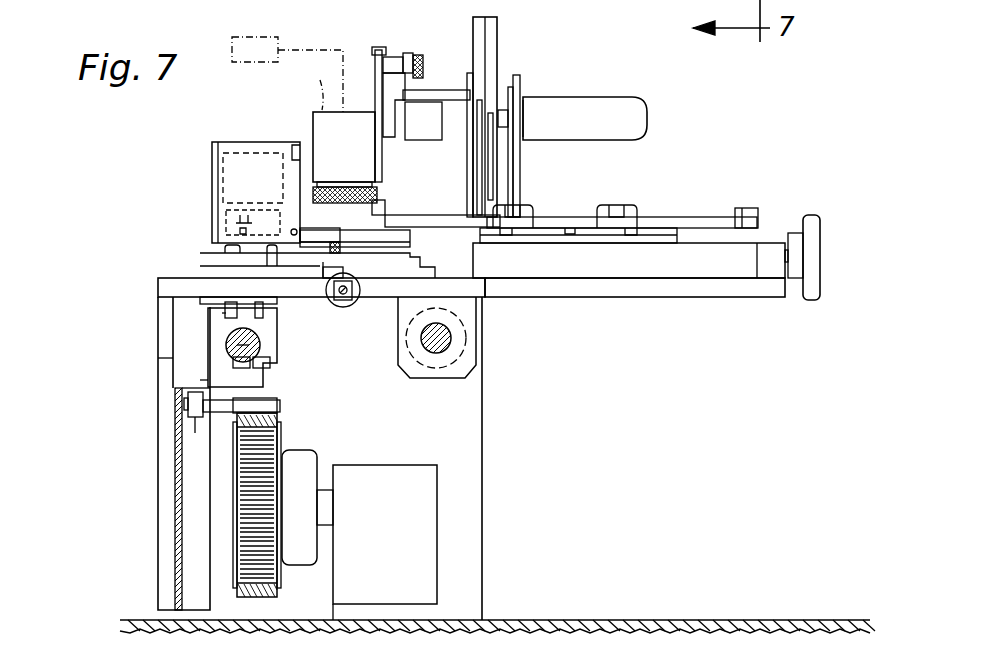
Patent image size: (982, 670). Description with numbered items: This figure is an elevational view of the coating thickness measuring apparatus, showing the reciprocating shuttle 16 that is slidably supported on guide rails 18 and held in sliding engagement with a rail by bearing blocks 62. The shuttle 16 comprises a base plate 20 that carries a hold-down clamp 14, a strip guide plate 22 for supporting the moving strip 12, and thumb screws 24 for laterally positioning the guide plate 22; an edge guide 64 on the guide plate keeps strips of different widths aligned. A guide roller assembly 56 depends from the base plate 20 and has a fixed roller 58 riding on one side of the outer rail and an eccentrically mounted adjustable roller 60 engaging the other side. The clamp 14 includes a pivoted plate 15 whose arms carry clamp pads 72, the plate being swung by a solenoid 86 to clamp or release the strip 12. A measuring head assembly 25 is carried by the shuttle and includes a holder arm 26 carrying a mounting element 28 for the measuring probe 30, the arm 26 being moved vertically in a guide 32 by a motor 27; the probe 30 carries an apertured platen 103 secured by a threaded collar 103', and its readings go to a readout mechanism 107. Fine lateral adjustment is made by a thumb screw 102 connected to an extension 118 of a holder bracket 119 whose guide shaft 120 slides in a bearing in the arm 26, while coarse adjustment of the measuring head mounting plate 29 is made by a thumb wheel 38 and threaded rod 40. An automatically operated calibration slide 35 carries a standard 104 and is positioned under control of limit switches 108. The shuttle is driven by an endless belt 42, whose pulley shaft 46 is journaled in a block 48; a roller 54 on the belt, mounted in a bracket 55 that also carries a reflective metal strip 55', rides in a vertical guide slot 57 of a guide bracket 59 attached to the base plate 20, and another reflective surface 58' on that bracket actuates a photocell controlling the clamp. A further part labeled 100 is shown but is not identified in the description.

The continuous moving strip 12 is at (360, 238).
The hold-down clamp 14 is at (212, 150).
The pivoted plate 15 is at (226, 222).
The reciprocating shuttle 16 is at (156, 268).
The guide rails 18 is at (226, 345).
The base plate 20 is at (190, 290).
The strip guide plate 22 is at (300, 237).
The thumb screws 24 is at (323, 297).
The measuring head assembly 25 is at (458, 68).
The holder arm 26 is at (442, 130).
The motor 27 is at (647, 118).
The mounting element 28 is at (313, 118).
The measuring head mounting plate 29 is at (717, 297).
The measuring probe 30 is at (320, 80).
The guide 32 is at (497, 20).
The calibration slide 35 is at (718, 208).
The thumb wheel 38 is at (812, 215).
The threaded rod 40 is at (803, 255).
The endless belt 42 is at (243, 597).
The shaft 46 is at (322, 490).
The block 48 is at (430, 535).
The roller 54 is at (195, 433).
The bracket 55 is at (259, 390).
The metal strip 55' is at (293, 400).
The guide roller assembly 56 is at (277, 352).
The vertical guide slot 57 is at (192, 470).
The fixed roller 58 is at (145, 321).
The reflective surface 58' is at (159, 382).
The guide bracket 59 is at (158, 358).
The adjustable roller 60 is at (235, 343).
The bearing blocks 62 is at (470, 370).
The edge guide 64 is at (413, 256).
The clamp pads 72 is at (323, 297).
The solenoid 86 is at (292, 145).
The support post 100 is at (450, 215).
The thumb screw 102 is at (405, 57).
The apertured platen 103 is at (402, 196).
The threaded collar 103' is at (268, 178).
The standard 104 is at (440, 215).
The readout mechanism 107 is at (257, 37).
The limit switches 108 is at (540, 205).
The extension 118 is at (375, 50).
The holder bracket 119 is at (375, 130).
The guide shaft 120 is at (383, 157).